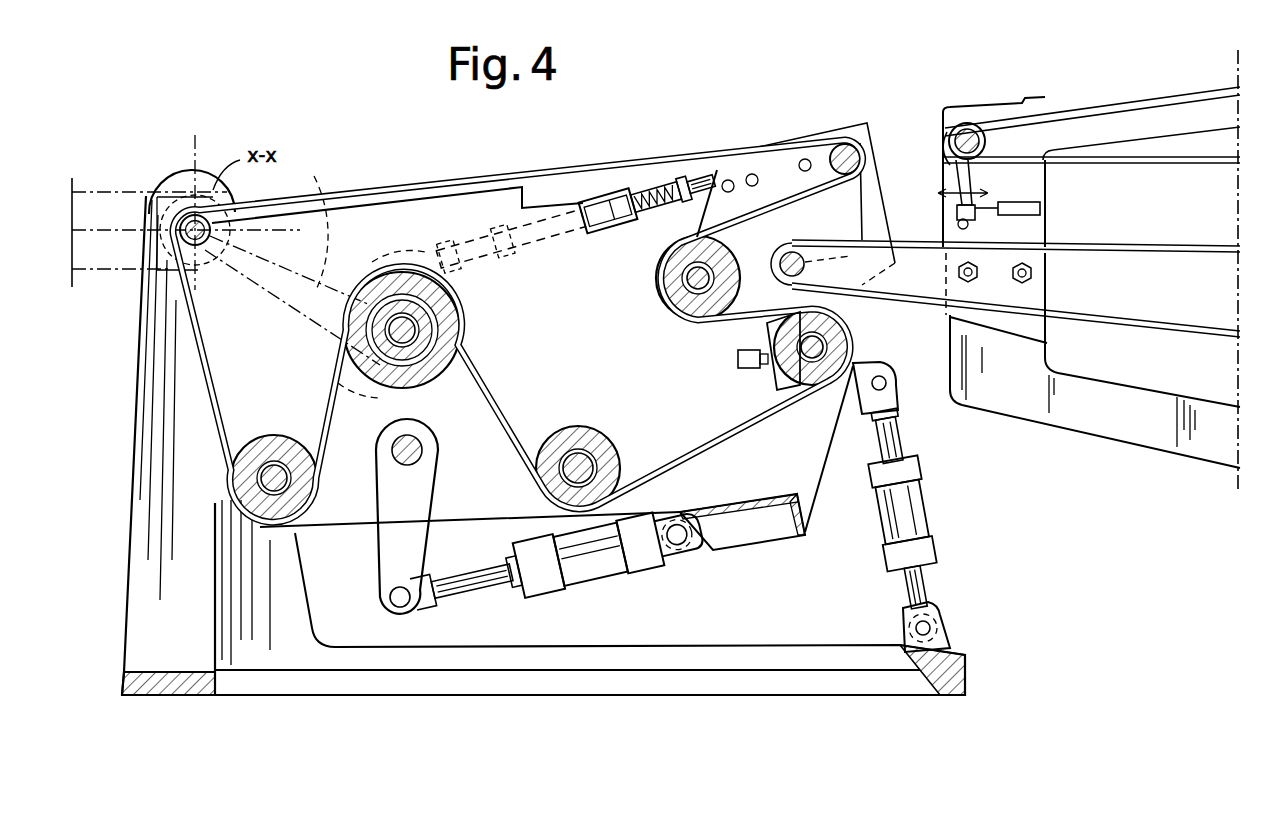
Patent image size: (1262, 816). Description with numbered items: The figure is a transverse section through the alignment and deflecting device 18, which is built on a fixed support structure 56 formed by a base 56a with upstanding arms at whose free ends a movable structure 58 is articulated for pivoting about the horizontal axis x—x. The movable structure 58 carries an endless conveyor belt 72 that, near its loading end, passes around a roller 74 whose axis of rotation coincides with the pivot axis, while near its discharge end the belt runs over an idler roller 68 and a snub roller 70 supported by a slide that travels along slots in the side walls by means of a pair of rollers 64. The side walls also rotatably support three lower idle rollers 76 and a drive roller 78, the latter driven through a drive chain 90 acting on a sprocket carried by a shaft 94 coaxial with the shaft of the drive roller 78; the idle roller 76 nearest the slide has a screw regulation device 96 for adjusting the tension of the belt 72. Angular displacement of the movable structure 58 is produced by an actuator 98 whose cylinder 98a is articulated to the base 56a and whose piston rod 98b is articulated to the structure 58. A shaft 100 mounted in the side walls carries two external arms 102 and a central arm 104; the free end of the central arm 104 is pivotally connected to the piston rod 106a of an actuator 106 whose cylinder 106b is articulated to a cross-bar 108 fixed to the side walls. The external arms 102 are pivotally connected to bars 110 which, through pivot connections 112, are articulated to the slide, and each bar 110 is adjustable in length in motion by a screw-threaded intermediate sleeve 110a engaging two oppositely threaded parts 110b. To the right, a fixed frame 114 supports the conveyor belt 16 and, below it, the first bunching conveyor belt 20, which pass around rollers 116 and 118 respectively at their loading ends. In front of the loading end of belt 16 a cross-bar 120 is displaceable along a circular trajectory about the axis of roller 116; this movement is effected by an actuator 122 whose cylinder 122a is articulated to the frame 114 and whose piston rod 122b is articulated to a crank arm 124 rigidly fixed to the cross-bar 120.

The conveyor belt 16 is at (1060, 112).
The alignment and deflecting device 18 is at (878, 98).
The first bunching conveyor belt 20 is at (1165, 244).
The fixed support structure 56 is at (135, 425).
The base 56a is at (755, 665).
The movable structure 58 is at (525, 166).
The rollers 64 is at (760, 172).
The idler roller 68 is at (660, 300).
The snub roller 70 is at (830, 140).
The endless conveyor belt 72 is at (232, 442).
The roller 74 is at (208, 250).
The lower idle rollers 76 is at (273, 440).
The drive roller 78 is at (458, 320).
The drive chain 90 is at (317, 215).
The shaft 94 is at (440, 340).
The screw regulation device 96 is at (752, 358).
The actuator 98 is at (878, 518).
The cylinder 98a is at (925, 503).
The piston rod 98b is at (900, 425).
The shaft 100 is at (424, 450).
The external arms 102 is at (345, 382).
The central arm 104 is at (415, 545).
The actuator 106 is at (552, 598).
The piston rod 106a is at (468, 580).
The cylinder 106b is at (598, 568).
The cross-bar 108 is at (736, 505).
The bars 110 is at (552, 195).
The screw-threaded intermediate sleeve 110a is at (556, 245).
The oppositely screw-threaded parts 110b is at (466, 234).
The pivot connections 112 is at (725, 178).
The fixed frame 114 is at (1135, 420).
The roller 116 is at (972, 118).
The roller 118 is at (800, 250).
The cross-bar 120 is at (945, 152).
The actuator 122 is at (1013, 190).
The cylinder 122a is at (1028, 208).
The piston rod 122b is at (957, 226).
The crank arm 124 is at (958, 185).